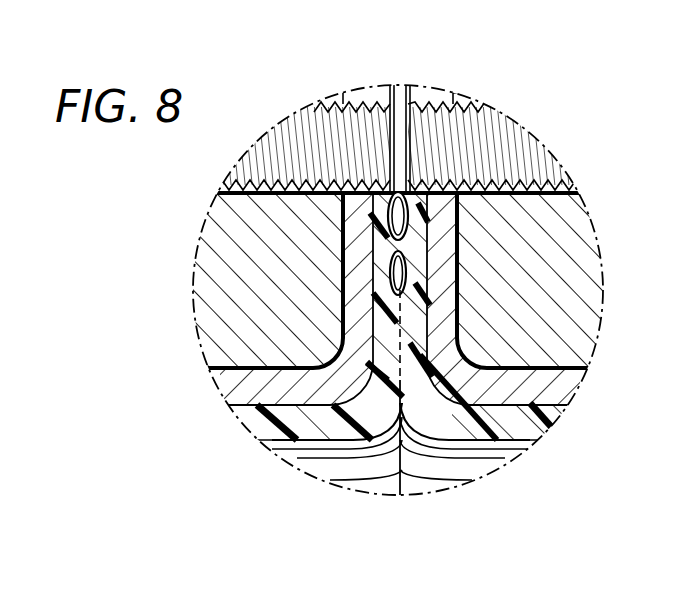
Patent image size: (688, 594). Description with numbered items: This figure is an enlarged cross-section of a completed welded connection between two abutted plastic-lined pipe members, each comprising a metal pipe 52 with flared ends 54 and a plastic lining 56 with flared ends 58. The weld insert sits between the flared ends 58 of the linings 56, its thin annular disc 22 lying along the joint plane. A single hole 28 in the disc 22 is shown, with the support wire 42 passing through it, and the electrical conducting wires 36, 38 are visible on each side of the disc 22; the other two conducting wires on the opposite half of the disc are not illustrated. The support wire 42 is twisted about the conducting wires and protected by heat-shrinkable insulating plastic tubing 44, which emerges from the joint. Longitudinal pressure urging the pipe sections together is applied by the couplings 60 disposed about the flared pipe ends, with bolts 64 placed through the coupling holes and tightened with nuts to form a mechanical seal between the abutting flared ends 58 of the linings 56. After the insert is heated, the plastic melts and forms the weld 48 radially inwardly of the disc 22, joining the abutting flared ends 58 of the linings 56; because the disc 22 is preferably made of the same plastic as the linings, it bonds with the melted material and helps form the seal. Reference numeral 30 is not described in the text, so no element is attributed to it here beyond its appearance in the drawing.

The annular disc 22 is at (432, 218).
The holes 28 is at (370, 228).
The diaphragm 30 is at (380, 288).
The electrical conducting wire 36 is at (372, 257).
The electrical conducting wire 38 is at (410, 265).
The support wire 42 is at (432, 238).
The heat-shrinkable insulating plastic tubing 44 is at (411, 84).
The weld 48 is at (385, 312).
The metal pipe 52 is at (235, 383).
The flared ends 54 is at (465, 330).
The plastic lining 56 is at (268, 430).
The flared ends 58 is at (415, 293).
The coupling 60 is at (200, 247).
The bolts 64 is at (522, 150).